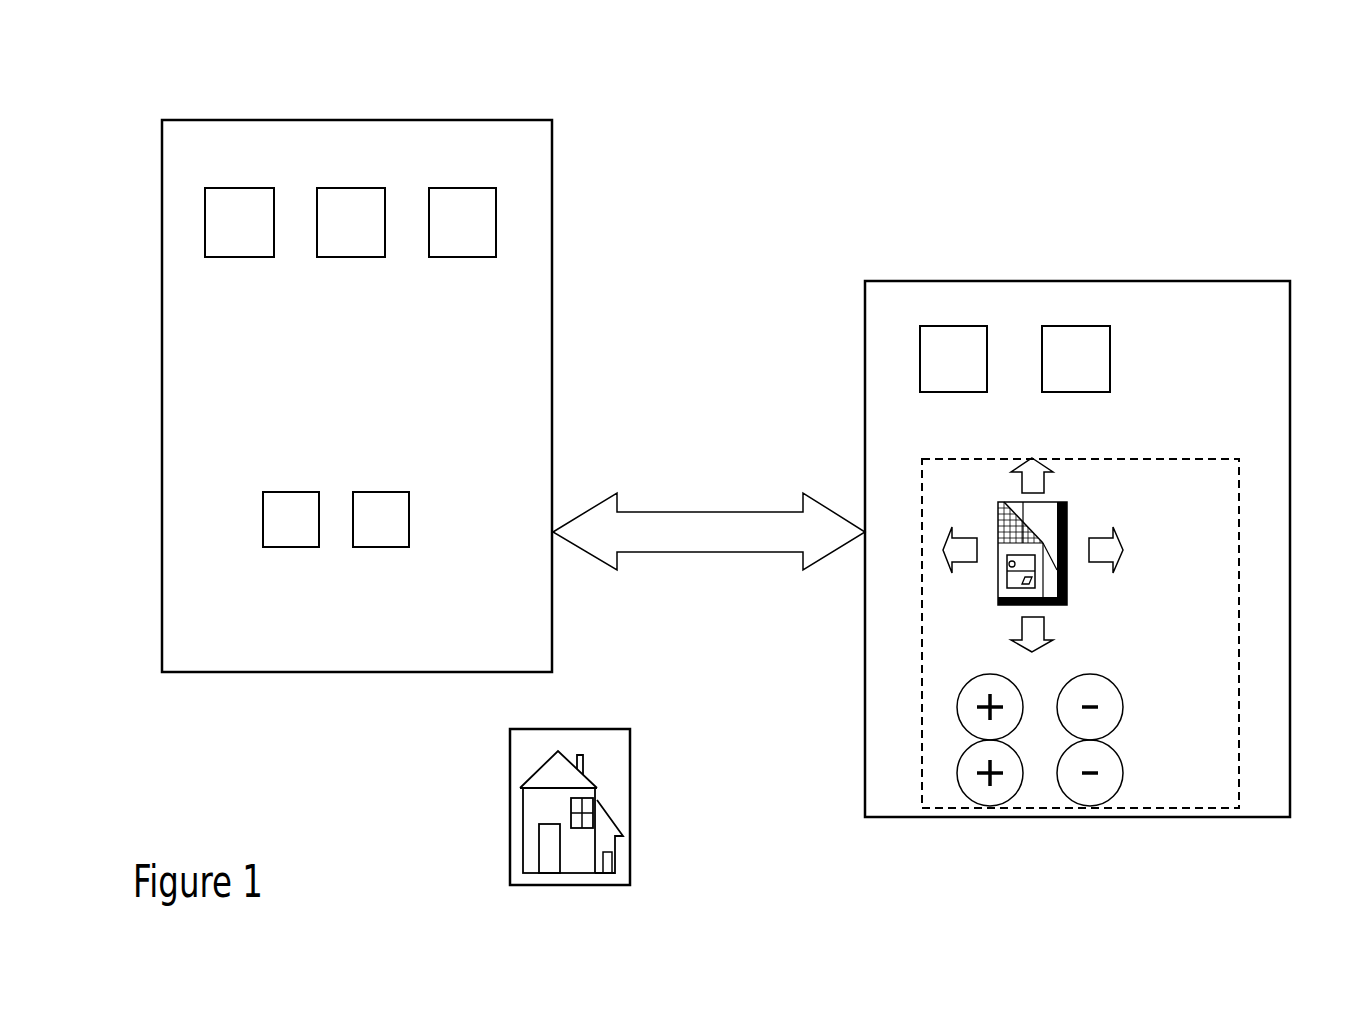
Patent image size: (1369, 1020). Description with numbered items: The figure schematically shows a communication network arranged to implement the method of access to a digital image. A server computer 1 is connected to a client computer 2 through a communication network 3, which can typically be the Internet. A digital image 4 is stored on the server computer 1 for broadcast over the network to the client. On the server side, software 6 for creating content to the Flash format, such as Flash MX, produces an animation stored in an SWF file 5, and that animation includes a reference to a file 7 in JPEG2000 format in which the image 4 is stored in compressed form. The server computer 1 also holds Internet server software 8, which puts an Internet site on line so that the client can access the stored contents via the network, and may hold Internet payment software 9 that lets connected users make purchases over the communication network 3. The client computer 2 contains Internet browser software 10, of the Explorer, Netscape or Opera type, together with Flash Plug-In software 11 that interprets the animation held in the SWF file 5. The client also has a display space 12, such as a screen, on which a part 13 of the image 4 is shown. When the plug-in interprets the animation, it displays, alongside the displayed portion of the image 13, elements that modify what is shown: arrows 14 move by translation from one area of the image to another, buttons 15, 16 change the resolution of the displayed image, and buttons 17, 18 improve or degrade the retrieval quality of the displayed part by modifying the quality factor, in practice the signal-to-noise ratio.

The server computer 1 is at (355, 120).
The client computer 2 is at (1041, 281).
The communication network 3 is at (711, 552).
The digital image 4 is at (510, 807).
The SWF file 5 is at (291, 547).
The software for creating content to the Flash format 6 is at (251, 188).
The file in JPEG2000 format 7 is at (380, 547).
The Internet server software 8 is at (355, 188).
The Internet payment software 9 is at (467, 188).
The Internet browser software 10 is at (947, 326).
The Flash Plug-In software 11 is at (1092, 326).
The display space 12 is at (1239, 635).
The part of the image 13 is at (1067, 518).
The arrows 14 is at (1013, 468).
The button 15 is at (957, 707).
The button 16 is at (1123, 707).
The button 17 is at (957, 773).
The button 18 is at (1123, 773).